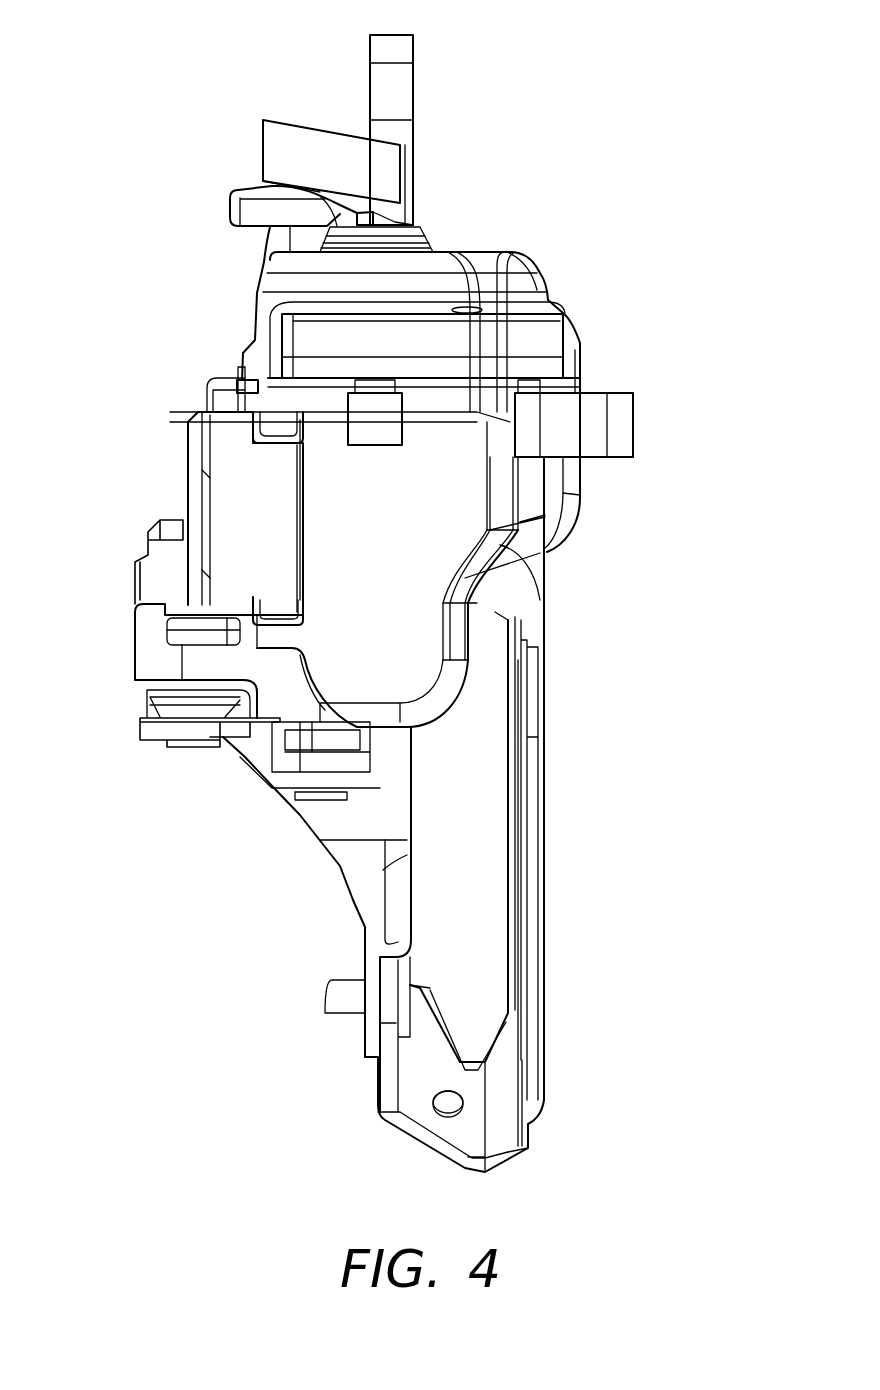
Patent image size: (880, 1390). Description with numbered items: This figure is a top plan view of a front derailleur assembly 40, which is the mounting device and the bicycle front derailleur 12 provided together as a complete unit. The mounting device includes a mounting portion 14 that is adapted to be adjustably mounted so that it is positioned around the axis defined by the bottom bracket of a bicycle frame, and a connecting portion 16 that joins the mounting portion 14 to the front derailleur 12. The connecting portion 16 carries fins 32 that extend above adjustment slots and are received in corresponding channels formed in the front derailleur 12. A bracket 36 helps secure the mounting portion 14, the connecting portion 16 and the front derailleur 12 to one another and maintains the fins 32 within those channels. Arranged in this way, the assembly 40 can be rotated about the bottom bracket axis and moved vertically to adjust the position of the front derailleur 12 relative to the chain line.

The front derailleur assembly 40 is at (655, 140).
The mounting portion 14 is at (401, 86).
The front derailleur 12 is at (538, 941).
The connecting portion 16 is at (233, 493).
The fins 32 is at (287, 430).
The bracket 36 is at (223, 660).